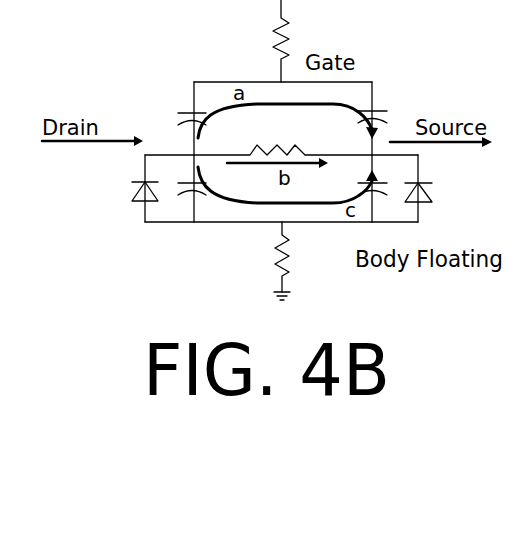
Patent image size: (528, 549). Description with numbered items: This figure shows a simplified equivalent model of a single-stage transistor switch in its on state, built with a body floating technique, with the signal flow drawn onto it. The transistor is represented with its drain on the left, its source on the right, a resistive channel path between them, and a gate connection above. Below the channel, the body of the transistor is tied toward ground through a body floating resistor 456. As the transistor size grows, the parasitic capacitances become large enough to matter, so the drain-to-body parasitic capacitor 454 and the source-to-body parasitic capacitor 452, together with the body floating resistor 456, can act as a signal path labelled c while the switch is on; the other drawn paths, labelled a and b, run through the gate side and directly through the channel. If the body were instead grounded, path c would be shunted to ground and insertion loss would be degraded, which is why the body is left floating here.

The source-to-body parasitic capacitor 452 is at (390, 187).
The drain-to-body parasitic capacitor 454 is at (177, 188).
The body floating resistor 456 is at (290, 257).